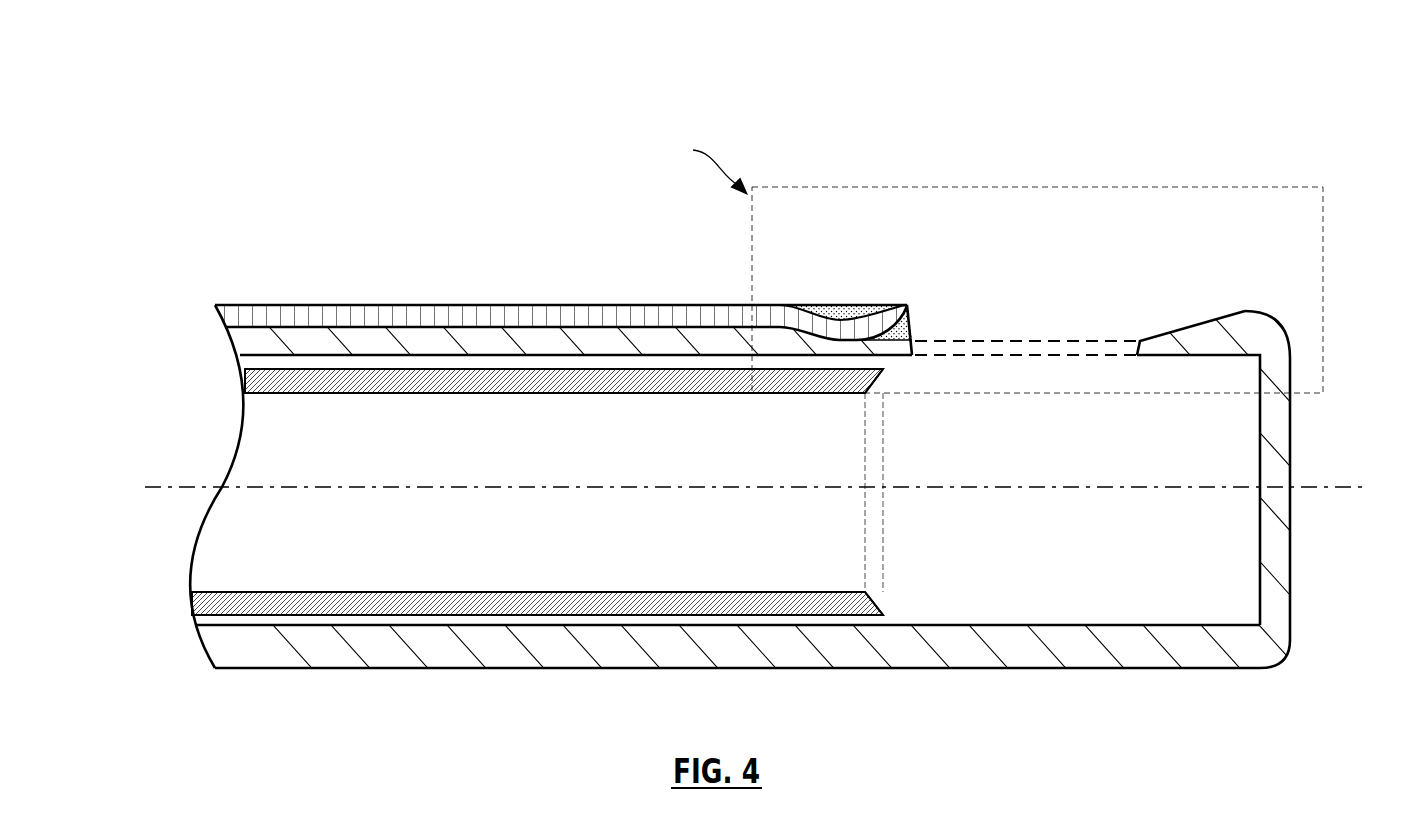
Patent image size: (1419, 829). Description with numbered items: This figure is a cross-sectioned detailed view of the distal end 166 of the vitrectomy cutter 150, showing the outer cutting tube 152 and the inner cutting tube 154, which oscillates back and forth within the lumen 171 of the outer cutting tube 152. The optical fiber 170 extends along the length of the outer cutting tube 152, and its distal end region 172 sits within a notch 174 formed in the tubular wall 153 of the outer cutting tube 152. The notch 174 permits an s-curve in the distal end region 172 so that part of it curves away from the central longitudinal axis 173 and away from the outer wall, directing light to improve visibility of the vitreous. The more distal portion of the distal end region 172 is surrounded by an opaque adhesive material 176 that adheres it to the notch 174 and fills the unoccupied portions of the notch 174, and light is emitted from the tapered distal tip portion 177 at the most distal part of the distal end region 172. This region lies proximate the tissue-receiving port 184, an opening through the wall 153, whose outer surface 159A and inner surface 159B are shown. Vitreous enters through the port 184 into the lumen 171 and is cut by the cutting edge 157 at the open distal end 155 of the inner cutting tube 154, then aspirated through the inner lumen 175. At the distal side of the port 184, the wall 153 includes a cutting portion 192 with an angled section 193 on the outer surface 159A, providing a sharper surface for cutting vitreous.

The vitrectomy cutter 150 is at (292, 135).
The outer cutting tube 152 is at (709, 492).
The tubular wall 153 is at (965, 640).
The inner cutting tube 154 is at (592, 555).
The open distal end 155 is at (910, 512).
The cutting edge 157 is at (883, 608).
The outer surface 159A is at (1102, 668).
The inner surface 159B is at (1092, 623).
The distal end 166 is at (1335, 645).
The optical fiber 170 is at (613, 270).
The lumen 171 is at (1188, 573).
The distal end region 172 is at (913, 288).
The central longitudinal axis 173 is at (1325, 485).
The notch 174 is at (890, 336).
The inner lumen 175 is at (575, 576).
The opaque adhesive material 176 is at (912, 323).
The tapered distal tip portion 177 is at (908, 316).
The tissue-receiving port 184 is at (1020, 346).
The cutting portion 192 is at (1155, 356).
The angled section 193 is at (1183, 328).